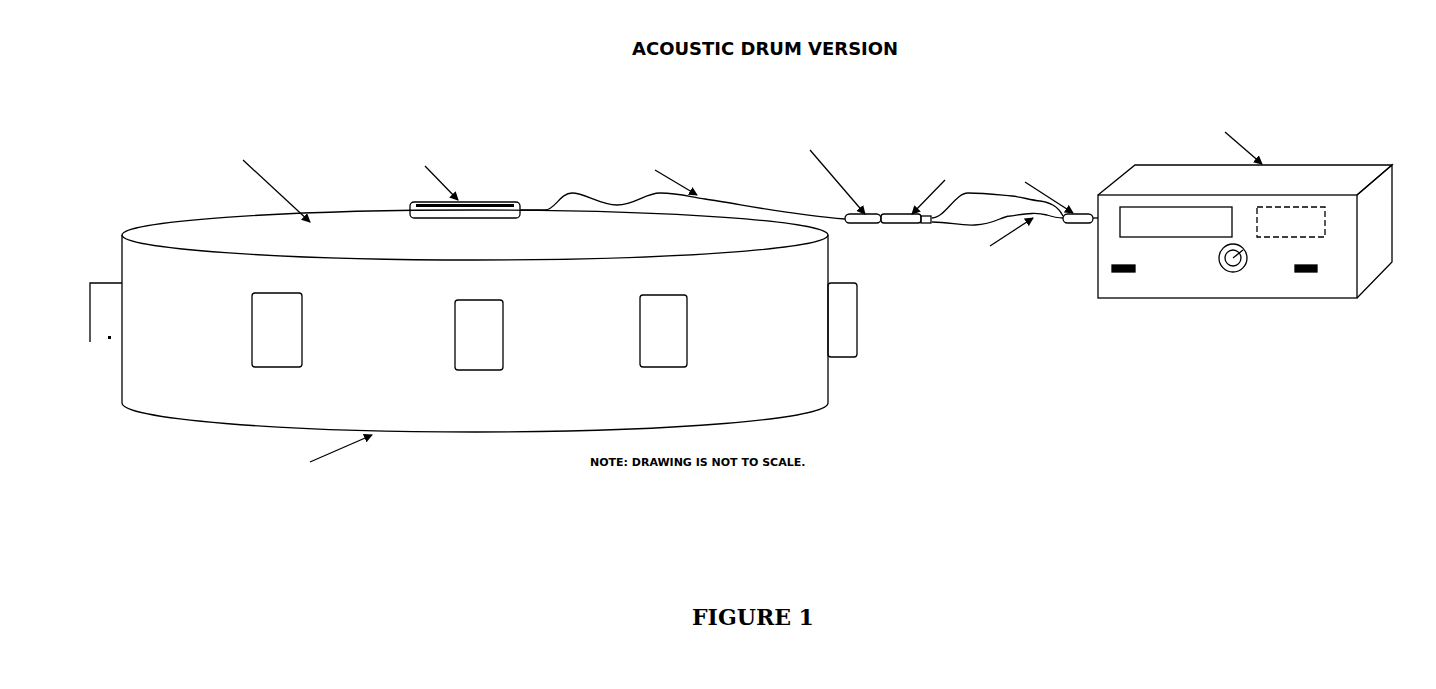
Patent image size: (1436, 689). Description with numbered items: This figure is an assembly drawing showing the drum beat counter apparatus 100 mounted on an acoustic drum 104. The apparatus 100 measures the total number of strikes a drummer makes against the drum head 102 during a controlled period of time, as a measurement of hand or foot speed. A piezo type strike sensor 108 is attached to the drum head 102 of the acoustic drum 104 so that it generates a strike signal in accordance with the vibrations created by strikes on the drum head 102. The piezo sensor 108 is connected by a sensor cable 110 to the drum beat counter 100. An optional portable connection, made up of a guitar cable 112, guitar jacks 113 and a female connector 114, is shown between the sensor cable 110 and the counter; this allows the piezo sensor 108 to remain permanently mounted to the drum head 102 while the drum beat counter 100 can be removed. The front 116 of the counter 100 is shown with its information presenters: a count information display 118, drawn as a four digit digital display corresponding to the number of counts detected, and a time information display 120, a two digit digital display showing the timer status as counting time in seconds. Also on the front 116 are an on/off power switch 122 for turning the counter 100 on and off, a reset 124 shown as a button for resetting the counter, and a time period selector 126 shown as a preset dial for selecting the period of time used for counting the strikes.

The drum beat counter apparatus 100 is at (1230, 198).
The drum head 102 is at (335, 230).
The acoustic drum 104 is at (800, 385).
The piezo type strike sensor 108 is at (473, 200).
The sensor cable 110 is at (713, 197).
The guitar cable 112 is at (1050, 215).
The guitar jacks 113 is at (1073, 213).
The female connector 114 is at (875, 212).
The front 116 is at (1345, 293).
The count information display 118 is at (1130, 210).
The time information display 120 is at (1318, 217).
The on/off power switch 122 is at (1103, 277).
The reset 124 is at (1305, 283).
The time period selector 126 is at (1228, 280).